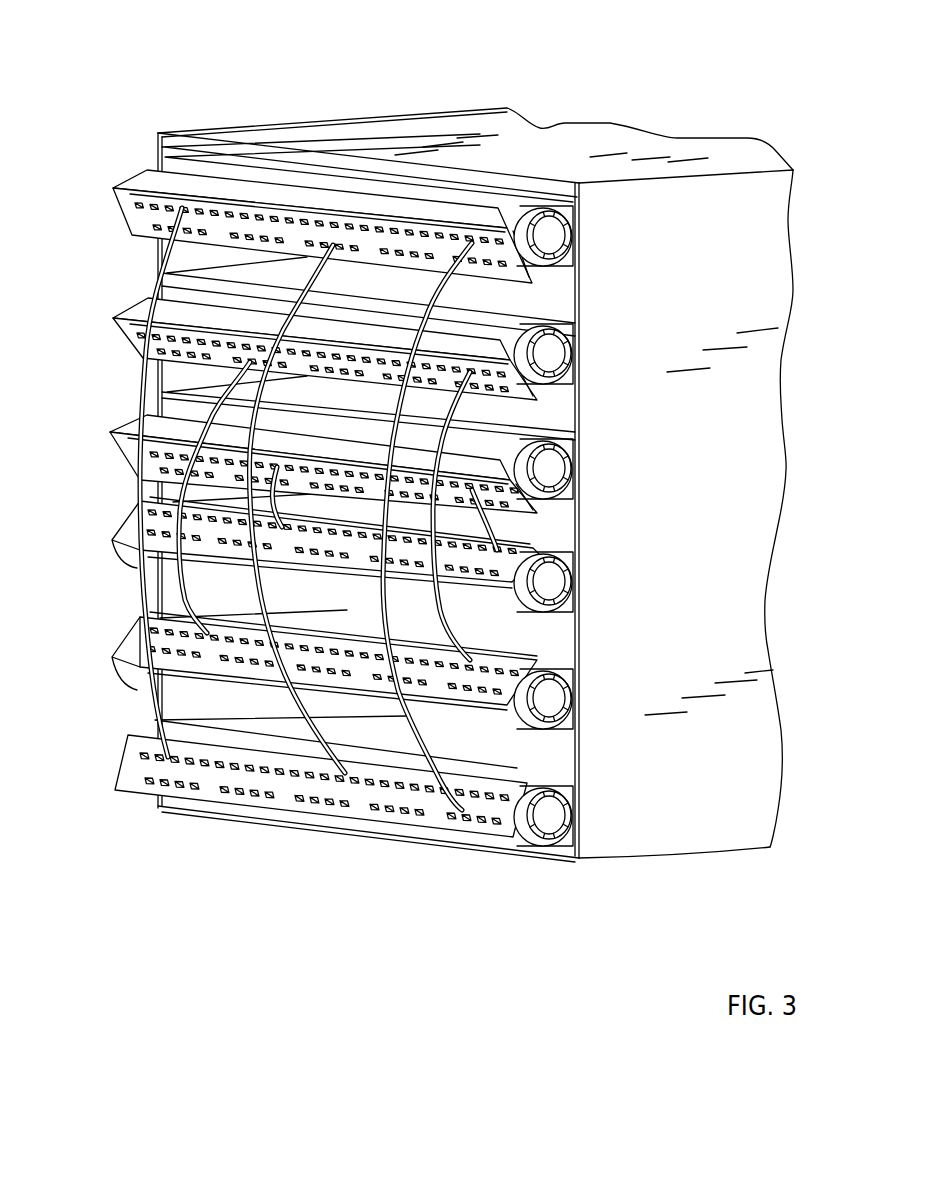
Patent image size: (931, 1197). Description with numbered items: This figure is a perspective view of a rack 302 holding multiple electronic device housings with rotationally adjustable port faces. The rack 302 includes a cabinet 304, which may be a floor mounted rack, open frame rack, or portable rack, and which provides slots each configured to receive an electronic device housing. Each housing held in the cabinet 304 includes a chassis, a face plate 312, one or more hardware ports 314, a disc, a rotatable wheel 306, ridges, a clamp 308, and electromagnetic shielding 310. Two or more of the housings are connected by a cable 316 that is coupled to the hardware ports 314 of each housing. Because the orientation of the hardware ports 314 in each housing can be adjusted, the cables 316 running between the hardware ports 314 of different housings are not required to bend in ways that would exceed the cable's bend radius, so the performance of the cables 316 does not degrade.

The rack 302 is at (294, 63).
The cabinet 304 is at (551, 143).
The rotatable wheel 306 is at (553, 230).
The clamp 308 is at (560, 263).
The electromagnetic shielding 310 is at (147, 172).
The face plate 312 is at (113, 192).
The hardware ports 314 is at (153, 226).
The cable 316 is at (143, 583).